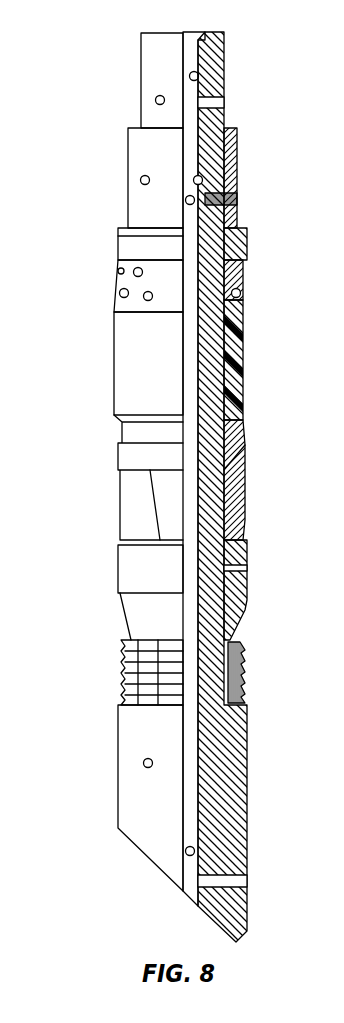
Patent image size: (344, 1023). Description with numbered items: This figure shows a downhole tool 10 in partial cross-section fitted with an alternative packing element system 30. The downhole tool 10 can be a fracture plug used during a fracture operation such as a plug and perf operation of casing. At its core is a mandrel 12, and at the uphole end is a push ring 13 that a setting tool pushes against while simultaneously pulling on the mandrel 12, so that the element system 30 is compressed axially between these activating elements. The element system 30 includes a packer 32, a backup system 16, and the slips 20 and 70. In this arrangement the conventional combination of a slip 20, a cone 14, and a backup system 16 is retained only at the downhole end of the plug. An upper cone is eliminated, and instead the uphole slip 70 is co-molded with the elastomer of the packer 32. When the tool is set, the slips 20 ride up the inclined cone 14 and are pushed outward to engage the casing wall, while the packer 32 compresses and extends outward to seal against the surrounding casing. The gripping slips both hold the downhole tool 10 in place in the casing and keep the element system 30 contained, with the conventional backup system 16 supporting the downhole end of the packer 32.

The downhole tool 10 is at (62, 111).
The mandrel 12 is at (141, 108).
The push ring 13 is at (118, 245).
The packing element system 30 is at (95, 378).
The slips 20 is at (122, 672).
The uphole slip 70 is at (241, 288).
The packer 32 is at (243, 368).
The backup system 16 is at (249, 470).
The cone 14 is at (246, 592).